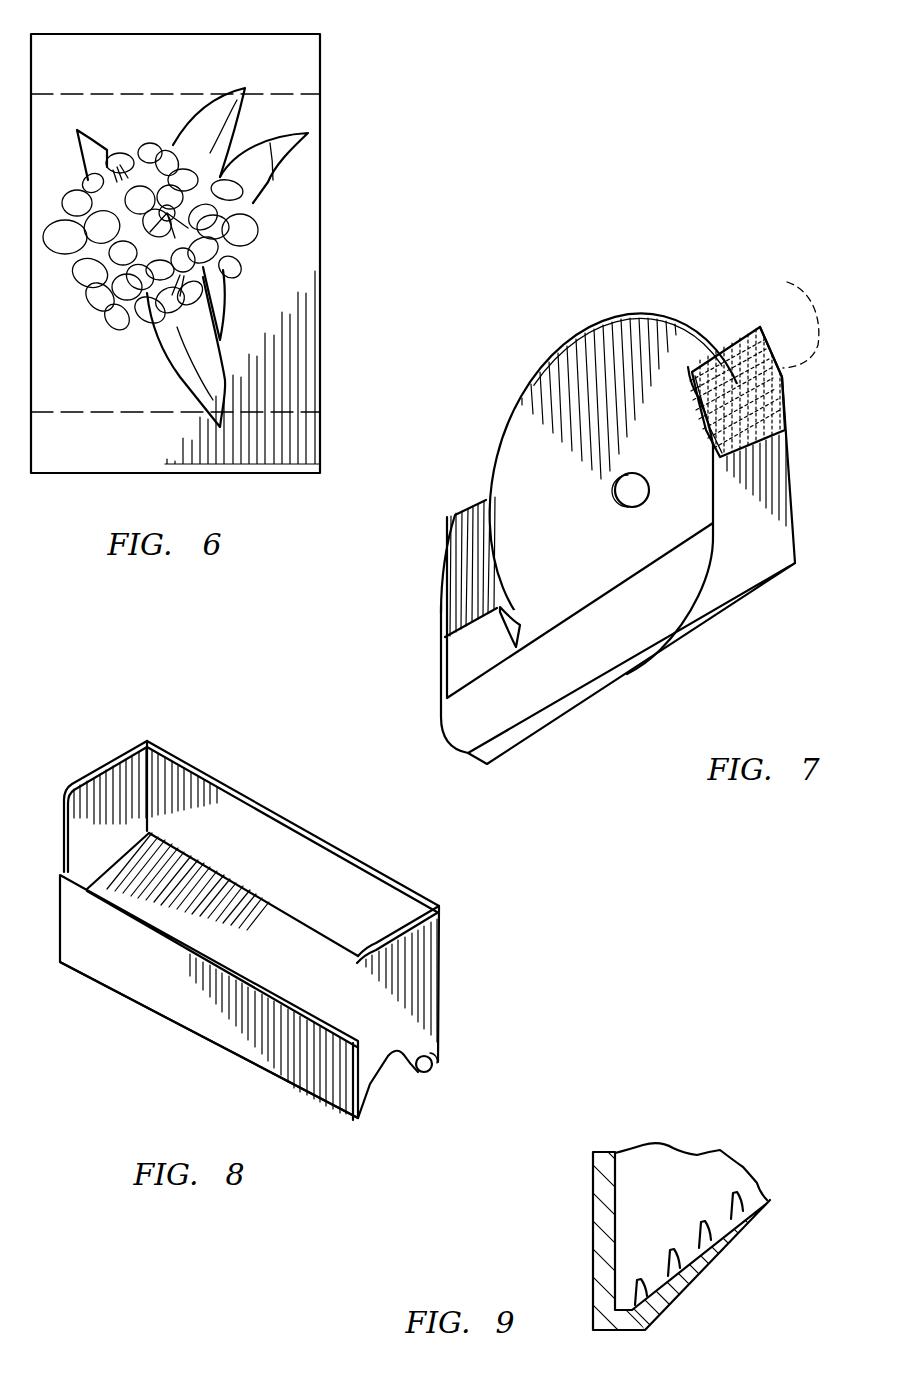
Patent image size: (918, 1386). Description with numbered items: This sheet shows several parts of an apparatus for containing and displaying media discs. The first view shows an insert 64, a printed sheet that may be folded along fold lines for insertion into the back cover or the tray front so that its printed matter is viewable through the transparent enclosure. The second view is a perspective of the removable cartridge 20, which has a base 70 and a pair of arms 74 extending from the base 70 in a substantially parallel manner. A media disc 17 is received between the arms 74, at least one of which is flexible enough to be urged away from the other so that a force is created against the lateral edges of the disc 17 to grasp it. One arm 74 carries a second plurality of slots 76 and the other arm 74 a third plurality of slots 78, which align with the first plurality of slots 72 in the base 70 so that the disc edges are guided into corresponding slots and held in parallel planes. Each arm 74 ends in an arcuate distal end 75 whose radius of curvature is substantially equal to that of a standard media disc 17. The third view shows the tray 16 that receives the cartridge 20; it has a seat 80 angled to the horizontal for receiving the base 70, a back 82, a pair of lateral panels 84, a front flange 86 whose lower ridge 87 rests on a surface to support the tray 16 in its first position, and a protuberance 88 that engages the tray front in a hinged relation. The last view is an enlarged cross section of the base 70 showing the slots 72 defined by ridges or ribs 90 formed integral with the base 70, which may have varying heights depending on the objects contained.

In FIG. 6, the insert 64 is at (322, 156).
In FIG. 7, the media disc 17 is at (563, 352).
In FIG. 7, the third plurality of slots 78 is at (785, 319).
In FIG. 7, the distal end 75 is at (793, 388).
In FIG. 7, the arm 74 is at (795, 480).
In FIG. 7, the second plurality of slots 76 is at (481, 642).
In FIG. 7, the cartridge 20 is at (617, 517).
In FIG. 7, the base 70 is at (637, 666).
In FIG. 9, the base 70 is at (703, 1272).
In FIG. 8, the tray 16 is at (296, 924).
In FIG. 8, the back 82 is at (303, 826).
In FIG. 8, the lateral panel 84 is at (114, 762).
In FIG. 8, the seat 80 is at (232, 927).
In FIG. 8, the front flange 86 is at (230, 1030).
In FIG. 8, the lower ridge 87 is at (290, 1089).
In FIG. 8, the protuberance 88 is at (437, 1068).
In FIG. 9, the first plurality of slots 72 is at (690, 1205).
In FIG. 9, the ridges or ribs 90 is at (676, 1258).